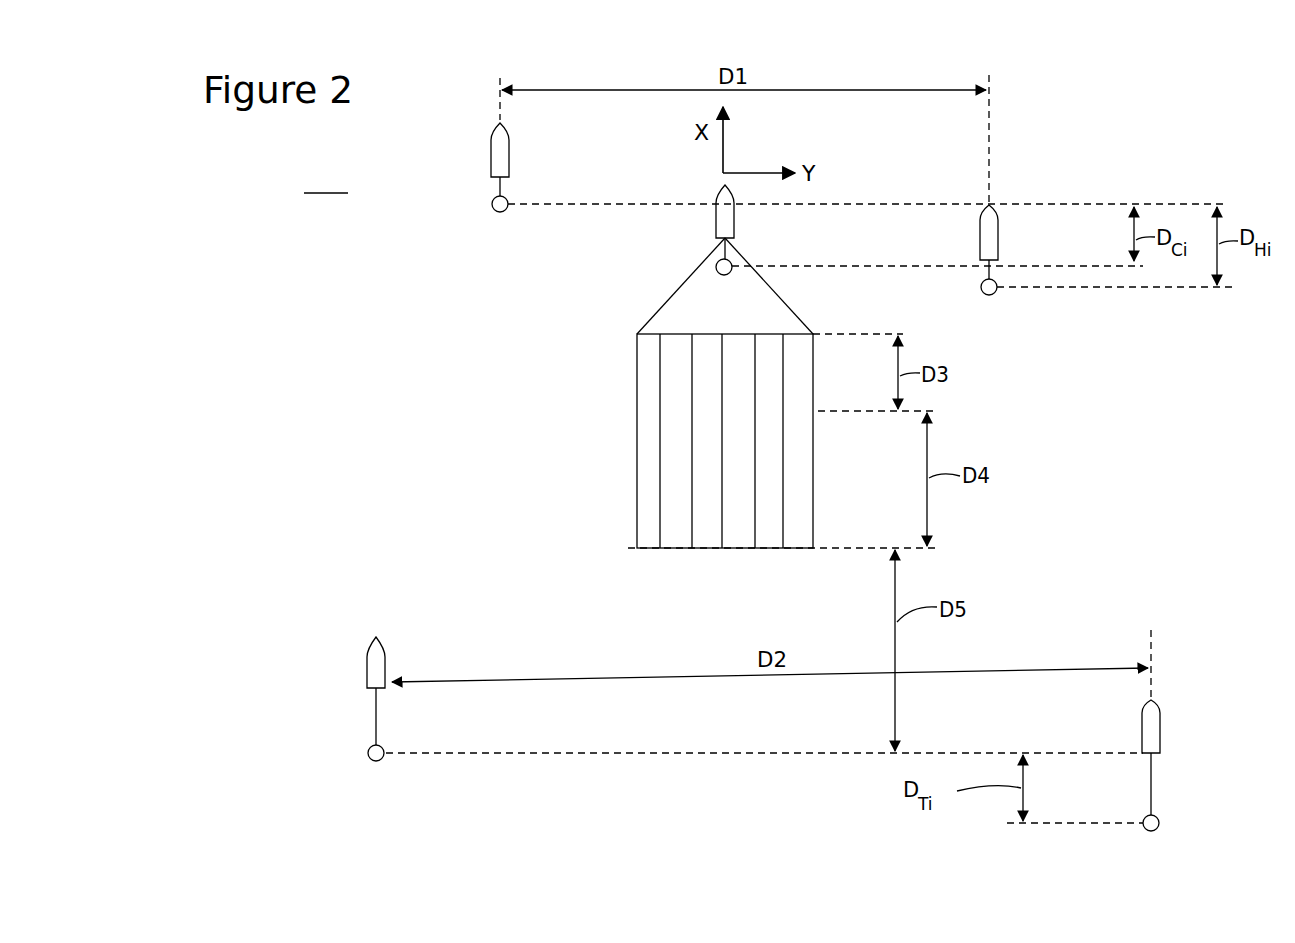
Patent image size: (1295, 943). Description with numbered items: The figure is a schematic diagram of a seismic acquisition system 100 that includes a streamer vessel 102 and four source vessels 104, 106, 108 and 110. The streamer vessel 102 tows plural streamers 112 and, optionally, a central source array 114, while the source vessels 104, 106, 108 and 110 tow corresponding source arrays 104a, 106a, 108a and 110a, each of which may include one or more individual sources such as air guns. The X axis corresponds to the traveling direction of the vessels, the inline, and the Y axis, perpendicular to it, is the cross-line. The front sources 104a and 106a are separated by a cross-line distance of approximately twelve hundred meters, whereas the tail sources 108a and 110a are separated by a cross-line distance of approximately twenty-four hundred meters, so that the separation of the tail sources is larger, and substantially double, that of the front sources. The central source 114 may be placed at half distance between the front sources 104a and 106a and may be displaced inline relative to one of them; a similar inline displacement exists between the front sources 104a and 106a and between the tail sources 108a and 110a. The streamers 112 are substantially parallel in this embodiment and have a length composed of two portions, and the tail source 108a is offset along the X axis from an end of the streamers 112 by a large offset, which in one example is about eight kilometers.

The seismic acquisition system 100 is at (326, 181).
The streamer vessel 102 is at (720, 196).
The source vessel 104 is at (492, 148).
The source array 104a is at (492, 210).
The source vessel 106 is at (998, 240).
The source array 106a is at (996, 293).
The source vessel 108 is at (366, 672).
The source array 108a is at (368, 755).
The source vessel 110 is at (1162, 736).
The source array 110a is at (1160, 822).
The streamers 112 is at (637, 423).
The source array 114 is at (718, 274).